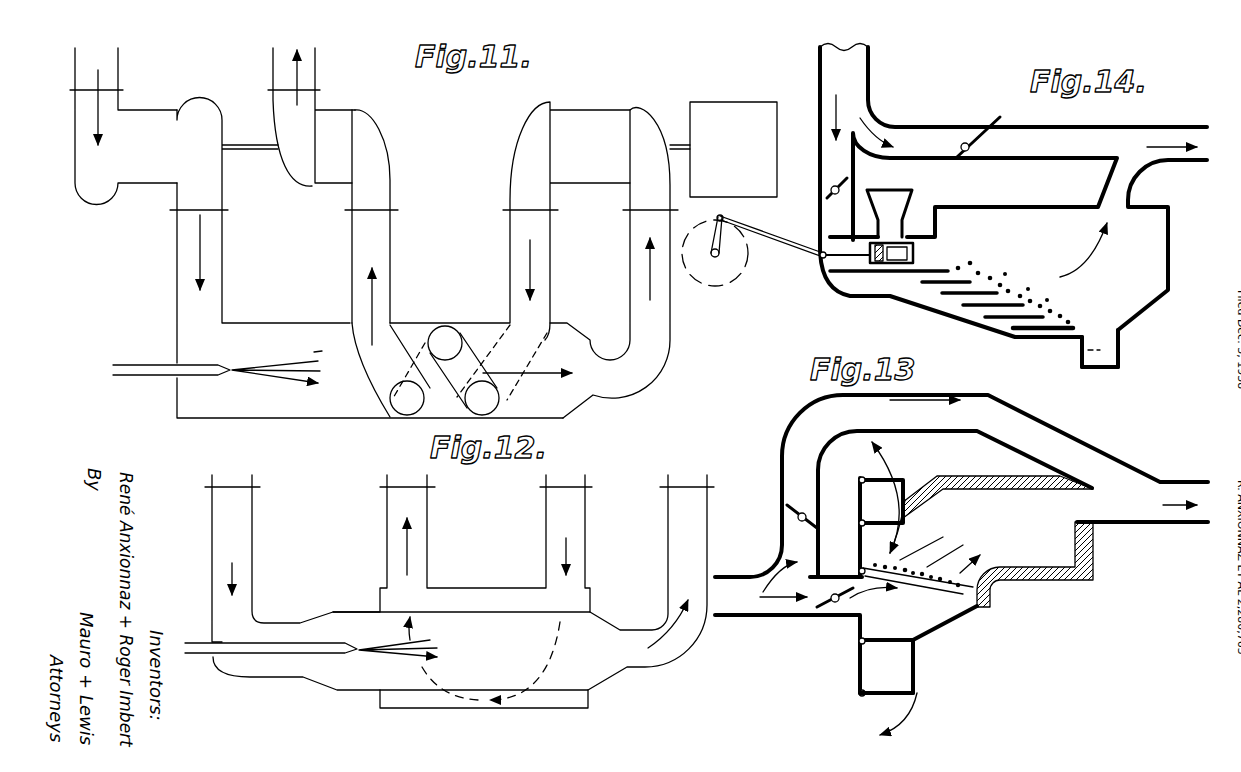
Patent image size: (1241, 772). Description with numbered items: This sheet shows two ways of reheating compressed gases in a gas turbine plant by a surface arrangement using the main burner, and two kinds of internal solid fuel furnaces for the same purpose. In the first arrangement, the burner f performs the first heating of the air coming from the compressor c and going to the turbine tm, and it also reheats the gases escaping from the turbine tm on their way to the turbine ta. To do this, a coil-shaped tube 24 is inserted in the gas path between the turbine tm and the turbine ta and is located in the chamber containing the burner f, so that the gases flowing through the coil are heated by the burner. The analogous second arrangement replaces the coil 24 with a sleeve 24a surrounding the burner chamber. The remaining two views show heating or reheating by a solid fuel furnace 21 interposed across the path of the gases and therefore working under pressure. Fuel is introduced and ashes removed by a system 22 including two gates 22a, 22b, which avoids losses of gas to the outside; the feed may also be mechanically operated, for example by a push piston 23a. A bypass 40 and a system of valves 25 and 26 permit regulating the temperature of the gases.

In FIG. 11, the compressor c is at (136, 115).
In FIG. 11, the turbine ta is at (342, 115).
In FIG. 11, the turbine tm is at (583, 122).
In FIG. 11, the burner f is at (217, 359).
In FIG. 12, the burner f is at (315, 635).
In FIG. 11, the coil-shaped tube 24 is at (405, 412).
In FIG. 12, the sleeve 24a is at (465, 595).
In FIG. 13, the bypass 40 is at (915, 395).
In FIG. 14, the bypass 40 is at (1103, 143).
In FIG. 13, the valve 25 is at (790, 513).
In FIG. 14, the valve 25 is at (973, 140).
In FIG. 13, the valve 26 is at (827, 610).
In FIG. 14, the valve 26 is at (829, 189).
In FIG. 13, the system 22 is at (878, 502).
In FIG. 14, the system 22 is at (1090, 360).
In FIG. 13, the gate 22a is at (883, 643).
In FIG. 13, the gate 22b is at (887, 697).
In FIG. 13, the solid fuel furnace 21 is at (1042, 557).
In FIG. 14, the solid fuel furnace 21 is at (1093, 273).
In FIG. 14, the push piston 23a is at (915, 252).